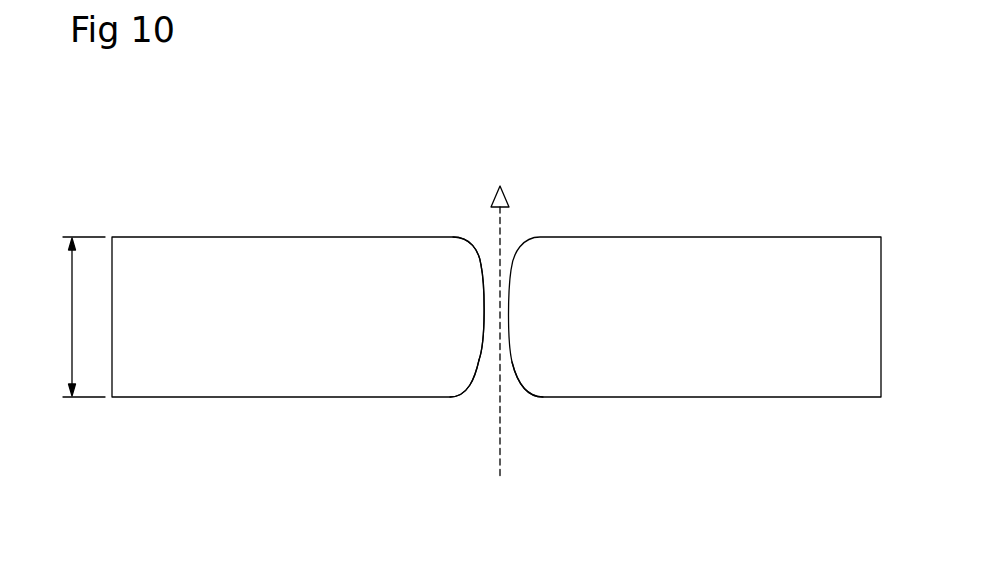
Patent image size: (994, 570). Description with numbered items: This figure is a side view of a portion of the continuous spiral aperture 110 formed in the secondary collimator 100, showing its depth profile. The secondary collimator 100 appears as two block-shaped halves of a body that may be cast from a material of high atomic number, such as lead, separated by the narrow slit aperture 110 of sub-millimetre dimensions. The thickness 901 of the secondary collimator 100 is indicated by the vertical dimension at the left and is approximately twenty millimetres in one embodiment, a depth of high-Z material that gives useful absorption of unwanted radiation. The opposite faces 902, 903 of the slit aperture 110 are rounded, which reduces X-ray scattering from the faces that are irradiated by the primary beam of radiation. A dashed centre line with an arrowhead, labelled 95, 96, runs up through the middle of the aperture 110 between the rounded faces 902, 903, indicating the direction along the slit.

The secondary collimator 100 is at (275, 311).
The continuous spiral aperture 110 is at (481, 246).
The laser beam / incident radiation 95 is at (570, 314).
The laser beam / incident radiation 96 is at (506, 200).
The thickness 901 is at (72, 314).
The opposite face 902 is at (472, 383).
The opposite face 903 is at (522, 385).